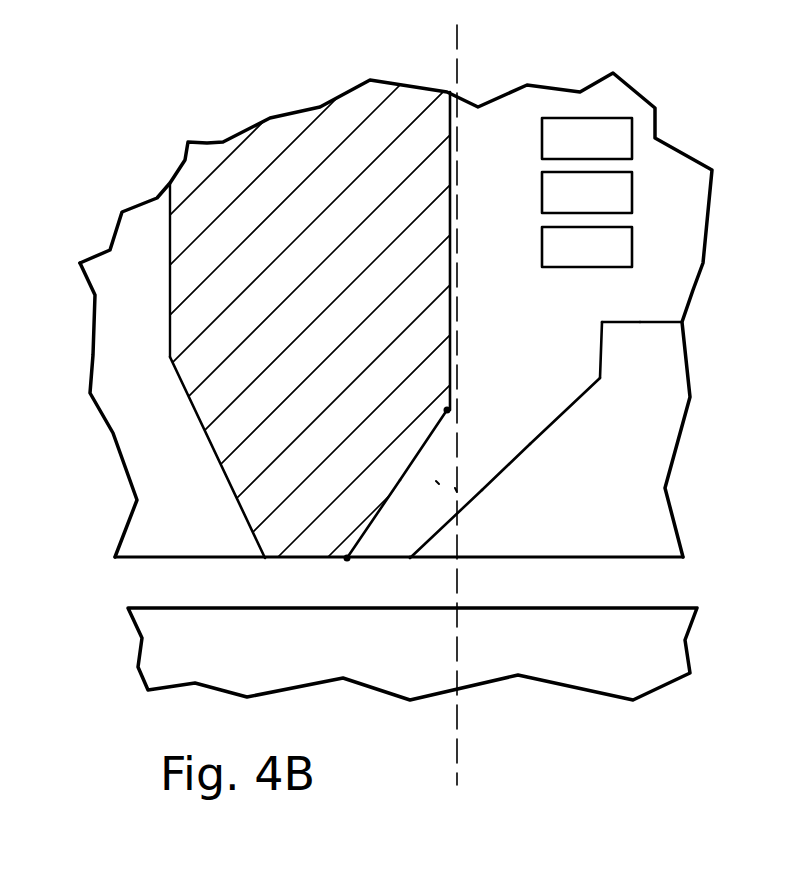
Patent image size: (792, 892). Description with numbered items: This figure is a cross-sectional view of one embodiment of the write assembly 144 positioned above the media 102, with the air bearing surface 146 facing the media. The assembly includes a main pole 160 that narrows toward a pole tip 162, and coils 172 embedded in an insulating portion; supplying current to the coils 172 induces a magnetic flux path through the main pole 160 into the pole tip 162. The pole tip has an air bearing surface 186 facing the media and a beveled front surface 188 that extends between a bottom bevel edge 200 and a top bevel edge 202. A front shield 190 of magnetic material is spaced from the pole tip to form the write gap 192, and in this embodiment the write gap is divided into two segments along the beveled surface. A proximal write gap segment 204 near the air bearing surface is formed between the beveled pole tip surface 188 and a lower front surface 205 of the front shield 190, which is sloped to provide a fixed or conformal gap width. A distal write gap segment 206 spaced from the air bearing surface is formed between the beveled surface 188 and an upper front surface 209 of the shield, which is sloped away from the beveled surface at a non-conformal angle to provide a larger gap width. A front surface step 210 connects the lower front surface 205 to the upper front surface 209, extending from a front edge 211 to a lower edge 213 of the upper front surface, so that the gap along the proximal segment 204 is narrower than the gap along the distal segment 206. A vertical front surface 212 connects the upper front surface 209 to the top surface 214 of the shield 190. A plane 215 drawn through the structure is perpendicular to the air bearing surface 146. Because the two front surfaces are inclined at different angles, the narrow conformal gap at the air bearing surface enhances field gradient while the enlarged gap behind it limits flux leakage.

The media 102 is at (627, 642).
The write assembly 144 is at (690, 137).
The air bearing surface 146 is at (646, 557).
The main pole 160 is at (288, 193).
The pole tip 162 is at (289, 436).
The coils 172 is at (569, 151).
The air bearing surface 186 is at (310, 560).
The beveled front surface 188 is at (393, 490).
The front shield 190 is at (589, 472).
The write gap 192 is at (422, 470).
The bottom bevel edge 200 is at (345, 556).
The top bevel edge 202 is at (452, 407).
The proximal write gap segment 204 is at (382, 534).
The lower front surface 205 is at (440, 517).
The distal write gap segment 206 is at (435, 464).
The upper front surface 209 is at (558, 407).
The step surface 210 is at (455, 490).
The front edge 211 is at (458, 488).
The vertical front surface 212 is at (587, 345).
The lower edge 213 is at (482, 502).
The top surface 214 is at (625, 320).
The plane 215 is at (459, 740).